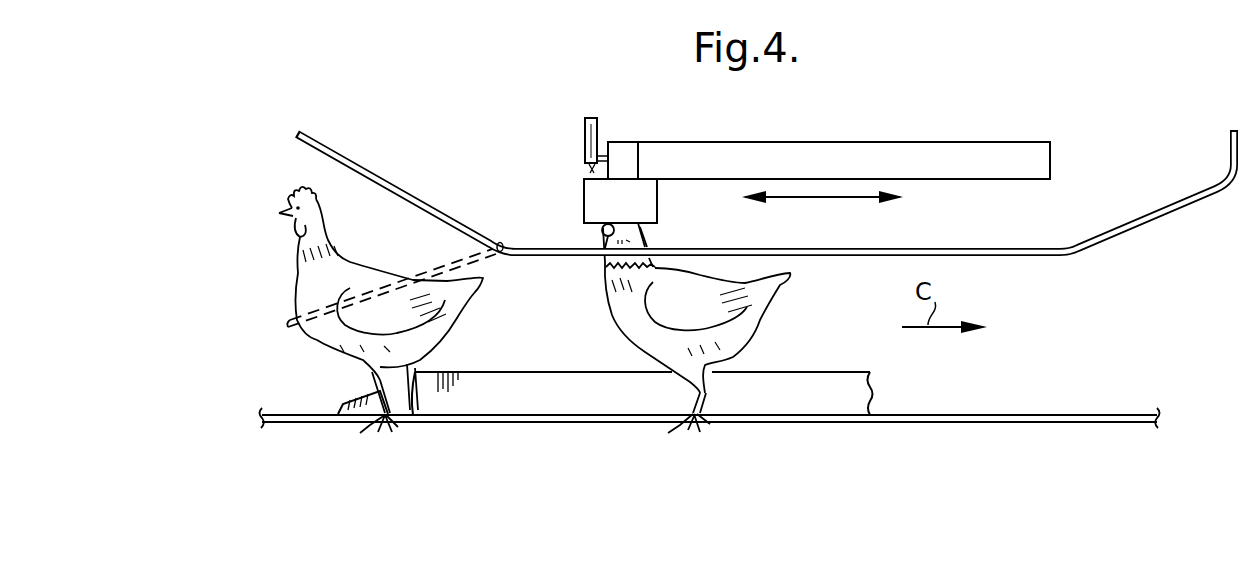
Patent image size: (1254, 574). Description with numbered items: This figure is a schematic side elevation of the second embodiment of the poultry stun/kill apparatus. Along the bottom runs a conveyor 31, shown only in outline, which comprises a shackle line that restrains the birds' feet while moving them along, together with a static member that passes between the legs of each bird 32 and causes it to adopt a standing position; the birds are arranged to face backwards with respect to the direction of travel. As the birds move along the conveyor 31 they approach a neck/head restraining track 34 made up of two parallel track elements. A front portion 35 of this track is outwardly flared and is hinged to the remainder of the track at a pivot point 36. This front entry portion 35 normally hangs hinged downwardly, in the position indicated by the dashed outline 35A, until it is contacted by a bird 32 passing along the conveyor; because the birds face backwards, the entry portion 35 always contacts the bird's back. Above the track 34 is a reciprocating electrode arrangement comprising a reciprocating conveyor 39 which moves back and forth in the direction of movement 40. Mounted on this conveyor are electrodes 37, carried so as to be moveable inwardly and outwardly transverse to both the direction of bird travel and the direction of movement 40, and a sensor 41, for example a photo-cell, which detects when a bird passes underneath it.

The conveyor 31 is at (522, 366).
The bird 32 is at (312, 292).
The neck/head restraining track 34 is at (1031, 258).
The front portion of the track 35 is at (408, 186).
The downwardly hinged position of the entry portion 35A is at (432, 276).
The pivot point 36 is at (502, 234).
The electrodes 37 is at (650, 203).
The reciprocating conveyor 39 is at (787, 150).
The direction of movement of the reciprocating conveyor 40 is at (820, 198).
The sensor 41 is at (585, 122).